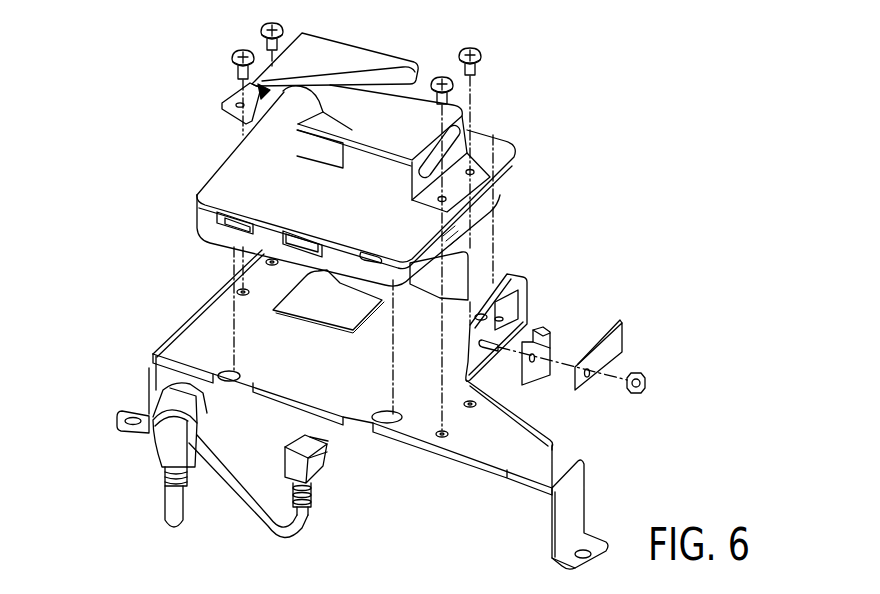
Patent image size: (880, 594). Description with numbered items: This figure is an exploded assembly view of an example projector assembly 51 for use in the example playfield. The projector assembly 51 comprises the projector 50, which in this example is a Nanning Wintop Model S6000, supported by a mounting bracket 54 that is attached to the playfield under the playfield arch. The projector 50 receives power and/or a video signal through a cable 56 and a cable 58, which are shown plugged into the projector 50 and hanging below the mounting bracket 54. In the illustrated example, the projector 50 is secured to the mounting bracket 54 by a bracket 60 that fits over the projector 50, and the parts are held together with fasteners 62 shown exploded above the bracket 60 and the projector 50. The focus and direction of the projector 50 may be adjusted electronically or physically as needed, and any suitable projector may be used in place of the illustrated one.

The projector 50 is at (228, 174).
The projector assembly 51 is at (587, 249).
The mounting bracket 54 is at (572, 505).
The cable 56 is at (318, 463).
The cable 58 is at (165, 447).
The bracket 60 is at (370, 125).
The screws 62 is at (236, 53).